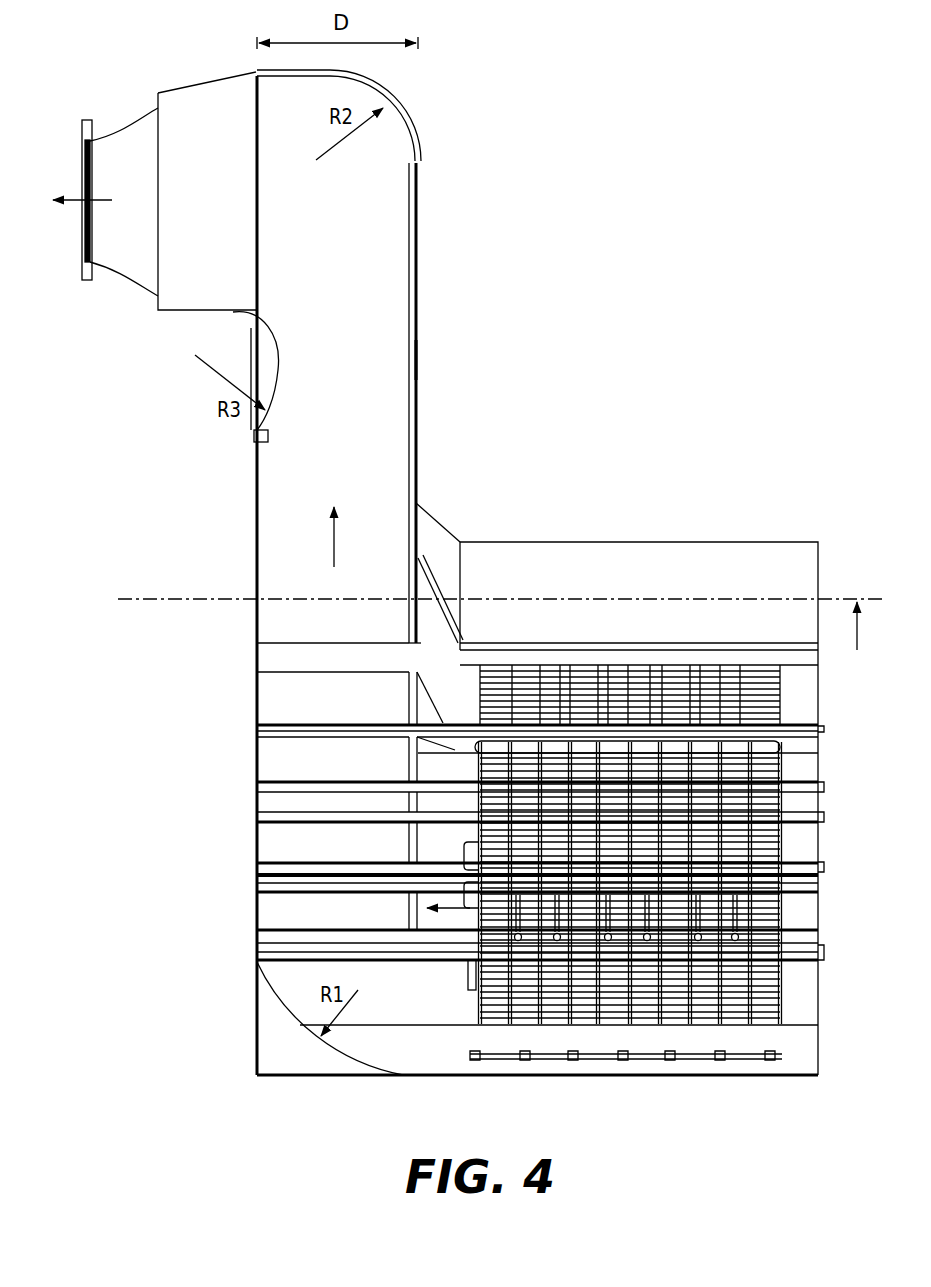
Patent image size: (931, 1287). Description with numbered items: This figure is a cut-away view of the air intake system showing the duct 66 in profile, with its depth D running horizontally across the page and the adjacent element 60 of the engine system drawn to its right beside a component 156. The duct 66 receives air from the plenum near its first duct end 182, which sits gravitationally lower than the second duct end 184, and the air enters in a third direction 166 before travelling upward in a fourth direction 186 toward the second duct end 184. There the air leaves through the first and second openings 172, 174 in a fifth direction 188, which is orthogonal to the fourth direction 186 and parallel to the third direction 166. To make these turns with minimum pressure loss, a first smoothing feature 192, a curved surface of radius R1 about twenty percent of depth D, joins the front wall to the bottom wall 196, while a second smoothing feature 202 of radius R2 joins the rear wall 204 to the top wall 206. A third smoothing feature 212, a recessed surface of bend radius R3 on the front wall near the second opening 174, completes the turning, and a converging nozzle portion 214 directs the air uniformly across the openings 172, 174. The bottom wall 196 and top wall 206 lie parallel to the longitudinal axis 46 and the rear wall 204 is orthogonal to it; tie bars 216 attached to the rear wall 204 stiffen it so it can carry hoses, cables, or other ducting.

The longitudinal axis 46 is at (857, 650).
The housing 60 is at (746, 543).
The duct 66 is at (420, 318).
The partition 156 is at (425, 851).
The third direction 166 is at (450, 908).
The first opening 172 is at (82, 140).
The second opening 174 is at (82, 140).
The first duct end 182 is at (365, 1087).
The second duct end 184 is at (393, 71).
The fourth direction 186 is at (332, 540).
The fifth direction 188 is at (68, 202).
The first smoothing feature 192 is at (257, 1013).
The bottom wall 196 is at (430, 1078).
The second smoothing feature 202 is at (410, 117).
The rear wall 204 is at (420, 362).
The top wall 206 is at (272, 70).
The third smoothing feature 212 is at (233, 313).
The converging nozzle portion 214 is at (172, 88).
The tie bars 216 is at (390, 234).